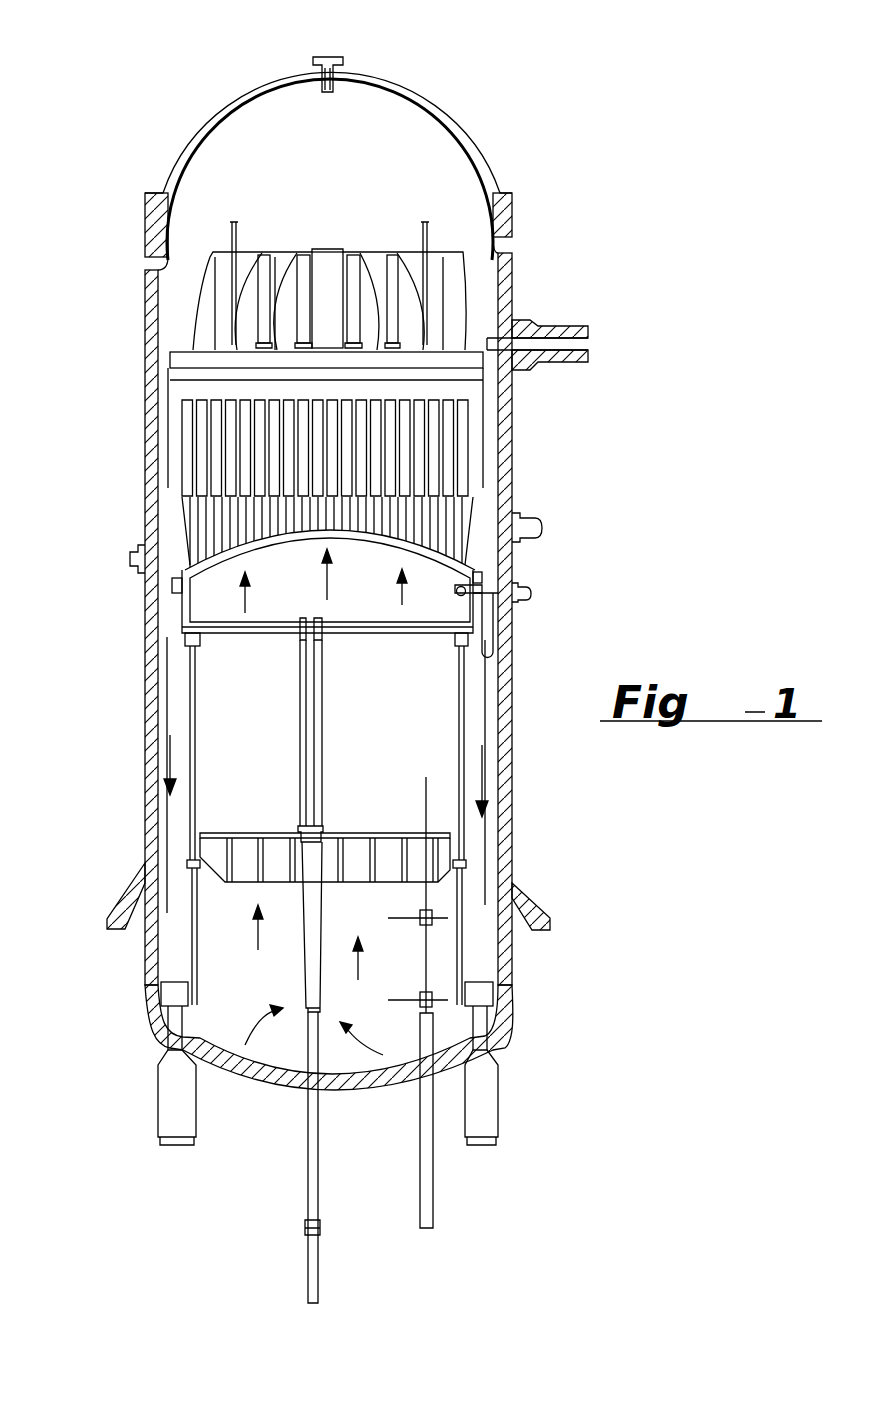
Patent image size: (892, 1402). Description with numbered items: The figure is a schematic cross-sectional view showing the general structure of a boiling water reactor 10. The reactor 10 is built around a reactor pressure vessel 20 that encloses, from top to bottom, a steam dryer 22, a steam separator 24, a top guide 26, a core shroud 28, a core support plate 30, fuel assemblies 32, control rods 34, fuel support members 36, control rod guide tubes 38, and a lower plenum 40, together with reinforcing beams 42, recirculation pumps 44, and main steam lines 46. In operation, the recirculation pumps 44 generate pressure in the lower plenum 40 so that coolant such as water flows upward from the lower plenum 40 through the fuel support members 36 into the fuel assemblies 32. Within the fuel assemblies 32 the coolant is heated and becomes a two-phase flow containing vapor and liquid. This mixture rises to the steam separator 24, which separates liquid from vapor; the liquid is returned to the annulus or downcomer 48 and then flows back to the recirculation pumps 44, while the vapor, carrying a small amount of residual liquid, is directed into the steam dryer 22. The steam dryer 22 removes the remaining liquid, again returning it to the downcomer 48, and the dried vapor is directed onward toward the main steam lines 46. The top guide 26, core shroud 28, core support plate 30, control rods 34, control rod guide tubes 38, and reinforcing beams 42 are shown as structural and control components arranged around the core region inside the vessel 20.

The boiling water reactor 10 is at (692, 156).
The reactor pressure vessel 20 is at (480, 97).
The steam dryer 22 is at (205, 312).
The steam separator 24 is at (238, 470).
The top guide 26 is at (230, 637).
The core shroud 28 is at (442, 788).
The core support plate 30 is at (252, 835).
The fuel assemblies 32 is at (297, 718).
The control rods 34 is at (312, 693).
The fuel support members 36 is at (327, 832).
The control rod guide tubes 38 is at (310, 922).
The lower plenum 40 is at (258, 989).
The reinforcing beams 42 is at (407, 860).
The recirculation pumps 44 is at (174, 996).
The main steam lines 46 is at (565, 325).
The annulus (downcomer) 48 is at (176, 703).